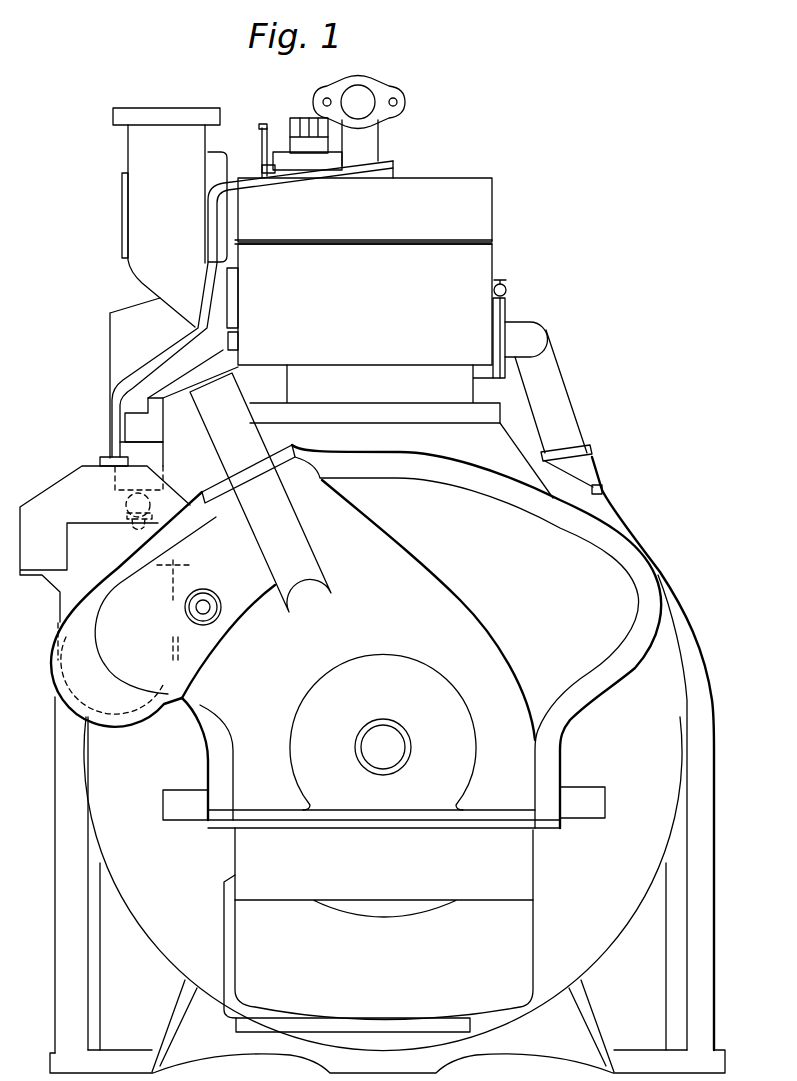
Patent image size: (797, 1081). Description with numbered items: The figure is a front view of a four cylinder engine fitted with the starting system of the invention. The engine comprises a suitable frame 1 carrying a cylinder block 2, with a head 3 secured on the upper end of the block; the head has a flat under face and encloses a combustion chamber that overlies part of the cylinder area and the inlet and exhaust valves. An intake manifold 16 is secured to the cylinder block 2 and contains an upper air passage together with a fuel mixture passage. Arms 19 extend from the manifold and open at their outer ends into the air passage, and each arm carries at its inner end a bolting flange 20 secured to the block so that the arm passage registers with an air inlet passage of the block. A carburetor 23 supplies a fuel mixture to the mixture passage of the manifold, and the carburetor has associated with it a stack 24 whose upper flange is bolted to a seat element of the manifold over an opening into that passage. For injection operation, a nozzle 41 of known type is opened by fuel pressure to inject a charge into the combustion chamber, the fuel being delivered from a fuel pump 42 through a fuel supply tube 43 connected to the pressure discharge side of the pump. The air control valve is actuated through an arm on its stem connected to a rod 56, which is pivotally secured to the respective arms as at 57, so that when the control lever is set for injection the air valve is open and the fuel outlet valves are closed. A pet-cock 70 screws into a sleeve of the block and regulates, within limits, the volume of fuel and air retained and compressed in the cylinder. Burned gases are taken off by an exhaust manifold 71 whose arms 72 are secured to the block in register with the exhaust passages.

The frame 1 is at (64, 810).
The cylinder block 2 is at (487, 267).
The head 3 is at (492, 225).
The intake manifold 16 is at (119, 377).
The arms 19 is at (193, 368).
The bolting flange 20 is at (236, 343).
The carburetor 23 is at (165, 460).
The stack 24 is at (148, 428).
The nozzle 41 is at (308, 145).
The fuel pump 42 is at (50, 488).
The fuel supply tube 43 is at (153, 351).
The rod 56 is at (262, 128).
The pivotal connection 57 is at (280, 118).
The pet-cock 70 is at (506, 289).
The exhaust manifold 71 is at (135, 146).
The arms 72 is at (222, 308).